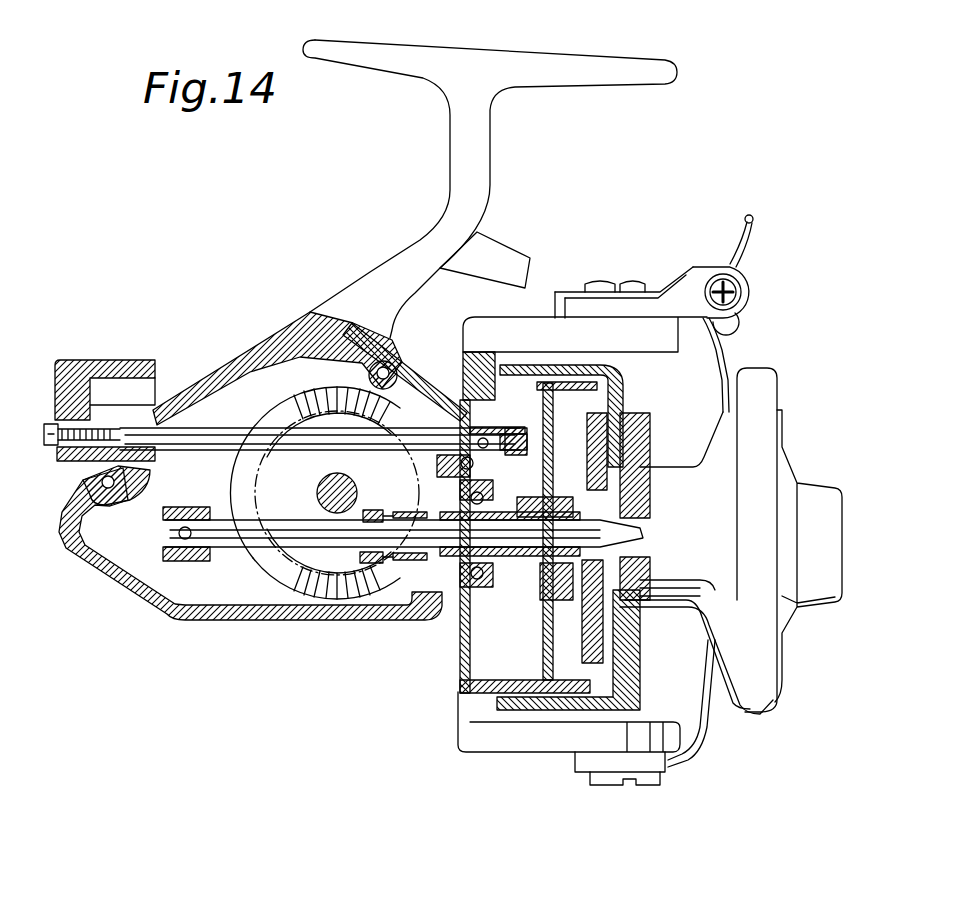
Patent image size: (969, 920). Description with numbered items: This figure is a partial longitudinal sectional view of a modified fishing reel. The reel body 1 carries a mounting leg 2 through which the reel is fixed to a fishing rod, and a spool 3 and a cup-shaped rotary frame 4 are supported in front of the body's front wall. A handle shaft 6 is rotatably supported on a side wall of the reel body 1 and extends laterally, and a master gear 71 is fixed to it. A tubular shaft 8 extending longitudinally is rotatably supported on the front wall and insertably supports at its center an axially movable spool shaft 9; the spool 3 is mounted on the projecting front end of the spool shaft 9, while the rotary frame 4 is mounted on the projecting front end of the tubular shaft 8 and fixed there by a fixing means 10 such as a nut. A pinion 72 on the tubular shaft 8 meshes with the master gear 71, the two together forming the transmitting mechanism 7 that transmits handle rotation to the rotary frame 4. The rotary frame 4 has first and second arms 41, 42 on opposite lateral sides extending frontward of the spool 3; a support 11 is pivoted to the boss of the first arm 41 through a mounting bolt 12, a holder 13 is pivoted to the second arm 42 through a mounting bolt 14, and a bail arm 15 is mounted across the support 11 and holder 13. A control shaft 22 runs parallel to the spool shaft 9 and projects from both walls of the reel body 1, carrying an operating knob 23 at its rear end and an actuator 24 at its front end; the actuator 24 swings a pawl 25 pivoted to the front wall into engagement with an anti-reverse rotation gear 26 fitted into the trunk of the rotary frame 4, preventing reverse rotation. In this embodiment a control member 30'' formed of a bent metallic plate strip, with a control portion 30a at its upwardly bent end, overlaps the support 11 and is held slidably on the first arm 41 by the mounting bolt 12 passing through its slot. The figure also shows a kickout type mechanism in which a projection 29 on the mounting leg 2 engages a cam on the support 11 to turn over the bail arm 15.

The reel body 1 is at (267, 618).
The mounting leg 2 is at (570, 68).
The spool 3 is at (775, 702).
The rotary frame 4 is at (513, 593).
The handle shaft 6 is at (368, 580).
The transmitting mechanism 7 is at (408, 752).
The tubular shaft 8 is at (440, 620).
The spool shaft 9 is at (340, 550).
The fixing means 10 is at (645, 503).
The support 11 is at (745, 278).
The mounting bolt 12 is at (636, 280).
The holder 13 is at (660, 766).
The mounting bolt 14 is at (645, 780).
The bail arm 15 is at (705, 728).
The control shaft 22 is at (225, 427).
The operating knob 23 is at (112, 360).
The actuator 24 is at (462, 378).
The pawl 25 is at (530, 460).
The anti-reverse rotation gear 26 is at (540, 636).
The projection 29 is at (493, 243).
The control member 30'' is at (624, 246).
The control portion 30a is at (752, 222).
The first arm 41 is at (563, 310).
The second arm 42 is at (527, 742).
The master gear 71 is at (375, 525).
The pinion 72 is at (397, 525).